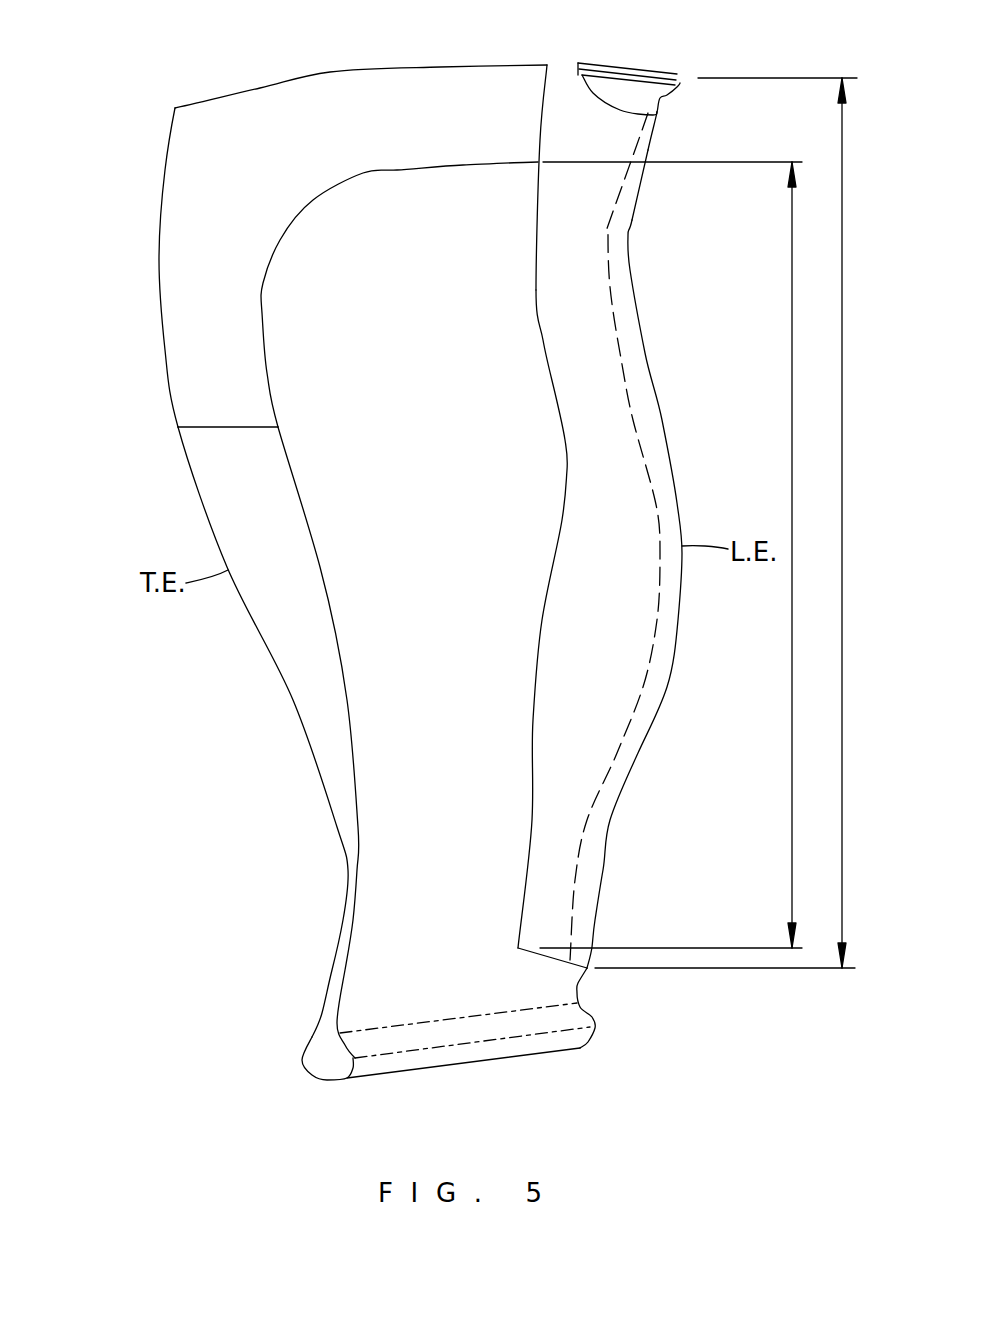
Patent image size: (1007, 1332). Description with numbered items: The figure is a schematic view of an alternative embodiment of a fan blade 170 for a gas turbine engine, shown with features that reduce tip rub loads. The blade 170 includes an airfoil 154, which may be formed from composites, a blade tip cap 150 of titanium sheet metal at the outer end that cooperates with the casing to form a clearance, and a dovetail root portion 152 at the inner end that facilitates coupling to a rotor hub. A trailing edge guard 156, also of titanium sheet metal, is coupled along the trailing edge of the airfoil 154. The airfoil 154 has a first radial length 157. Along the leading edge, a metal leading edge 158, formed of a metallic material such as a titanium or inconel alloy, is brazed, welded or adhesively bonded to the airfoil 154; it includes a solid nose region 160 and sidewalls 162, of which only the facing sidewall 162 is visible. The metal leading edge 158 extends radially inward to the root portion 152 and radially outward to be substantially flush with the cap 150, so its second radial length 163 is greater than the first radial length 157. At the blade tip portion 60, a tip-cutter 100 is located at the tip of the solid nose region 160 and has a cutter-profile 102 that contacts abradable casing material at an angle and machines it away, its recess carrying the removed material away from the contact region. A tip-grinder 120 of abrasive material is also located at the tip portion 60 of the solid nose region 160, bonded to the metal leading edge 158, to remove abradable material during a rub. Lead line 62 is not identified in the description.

The blade 170 is at (157, 45).
The blade tip portion 60 is at (438, 47).
The platform top surface 62 is at (330, 72).
The tip-grinder 120 is at (633, 62).
The cutter-profile 102 is at (680, 83).
The tip-cutter 100 is at (685, 105).
The metal leading edge (MLE) 158 is at (667, 140).
The solid nose region 160 is at (630, 275).
The sidewall 162 is at (593, 702).
The first radial length 157 is at (792, 498).
The second radial length 163 is at (842, 572).
The blade tip cap 150 is at (279, 167).
The airfoil 154 is at (449, 383).
The trailing edge guard 156 is at (266, 508).
The dovetail root portion 152 is at (517, 1047).